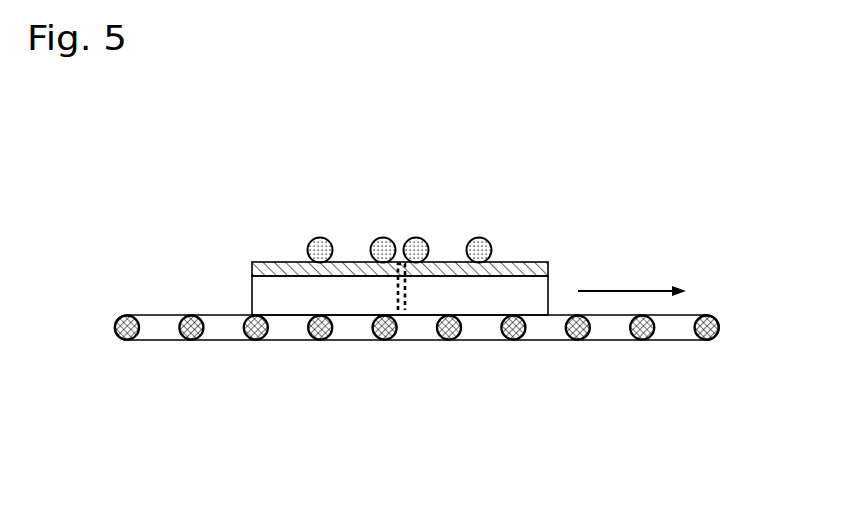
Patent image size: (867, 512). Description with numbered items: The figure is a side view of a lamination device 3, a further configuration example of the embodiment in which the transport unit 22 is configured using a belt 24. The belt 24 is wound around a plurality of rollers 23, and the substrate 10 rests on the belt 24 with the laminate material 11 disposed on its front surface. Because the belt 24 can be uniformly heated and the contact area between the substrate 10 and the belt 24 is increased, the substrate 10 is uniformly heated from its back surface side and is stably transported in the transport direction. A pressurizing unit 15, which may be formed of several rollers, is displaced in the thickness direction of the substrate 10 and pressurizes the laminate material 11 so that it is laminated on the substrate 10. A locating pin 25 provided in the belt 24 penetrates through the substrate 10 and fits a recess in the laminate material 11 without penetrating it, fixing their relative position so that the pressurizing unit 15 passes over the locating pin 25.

The lamination device 3 is at (642, 165).
The substrate 10 is at (252, 292).
The laminate material 11 is at (252, 266).
The pressurizing unit 15 is at (290, 177).
The transport unit 22 is at (632, 378).
The rollers 23 is at (122, 341).
The belt 24 is at (285, 341).
The locating pin 25 is at (407, 293).